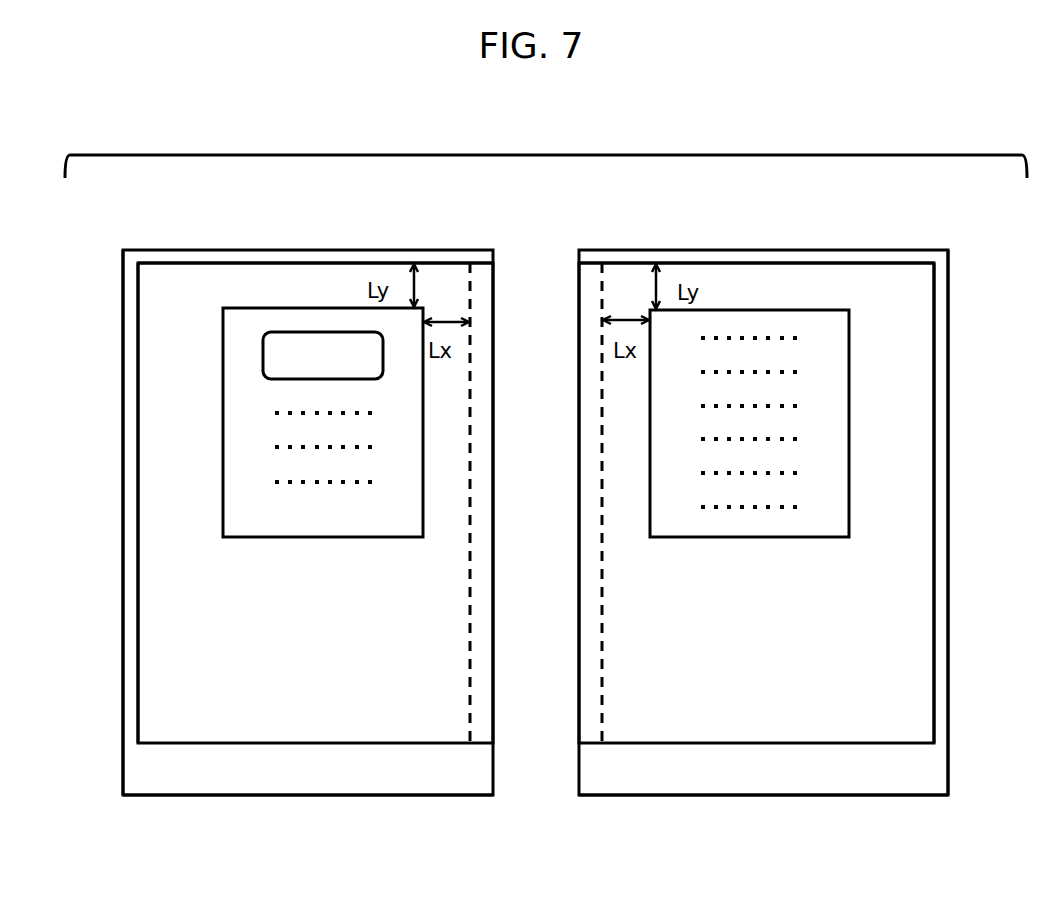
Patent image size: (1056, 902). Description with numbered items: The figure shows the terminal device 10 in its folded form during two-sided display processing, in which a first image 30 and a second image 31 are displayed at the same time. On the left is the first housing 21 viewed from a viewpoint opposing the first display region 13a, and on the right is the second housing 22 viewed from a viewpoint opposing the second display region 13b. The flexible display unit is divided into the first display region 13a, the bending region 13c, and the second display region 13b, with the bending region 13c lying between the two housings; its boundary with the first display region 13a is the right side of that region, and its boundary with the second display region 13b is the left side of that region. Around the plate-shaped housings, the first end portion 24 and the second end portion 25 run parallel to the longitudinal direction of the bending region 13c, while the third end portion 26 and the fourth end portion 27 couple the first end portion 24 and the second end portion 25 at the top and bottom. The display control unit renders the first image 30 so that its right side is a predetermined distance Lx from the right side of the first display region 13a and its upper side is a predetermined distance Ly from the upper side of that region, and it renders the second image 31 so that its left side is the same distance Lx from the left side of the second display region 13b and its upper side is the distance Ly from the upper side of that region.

The terminal device 10 is at (541, 155).
The first housing 21 is at (130, 263).
The second housing 22 is at (943, 265).
The first display region 13a is at (253, 277).
The second display region 13b is at (762, 277).
The bending region 13c is at (484, 290).
The third end portion 26 is at (368, 250).
The first end portion 24 is at (122, 466).
The second end portion 25 is at (949, 442).
The fourth end portion 27 is at (328, 796).
The first image 30 is at (299, 538).
The second image 31 is at (752, 538).